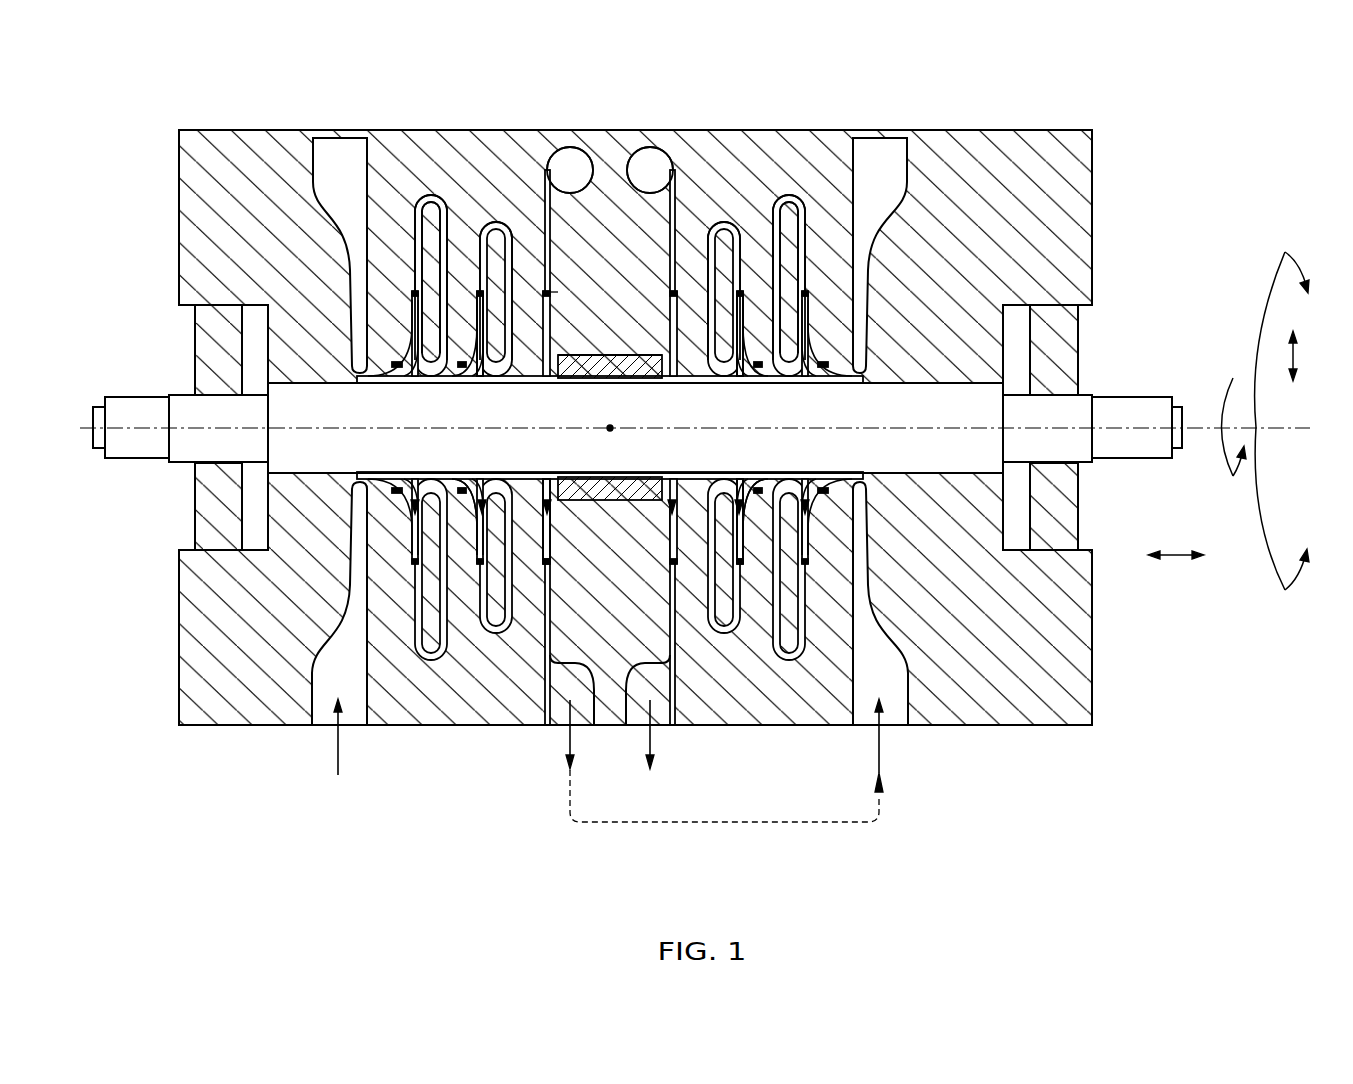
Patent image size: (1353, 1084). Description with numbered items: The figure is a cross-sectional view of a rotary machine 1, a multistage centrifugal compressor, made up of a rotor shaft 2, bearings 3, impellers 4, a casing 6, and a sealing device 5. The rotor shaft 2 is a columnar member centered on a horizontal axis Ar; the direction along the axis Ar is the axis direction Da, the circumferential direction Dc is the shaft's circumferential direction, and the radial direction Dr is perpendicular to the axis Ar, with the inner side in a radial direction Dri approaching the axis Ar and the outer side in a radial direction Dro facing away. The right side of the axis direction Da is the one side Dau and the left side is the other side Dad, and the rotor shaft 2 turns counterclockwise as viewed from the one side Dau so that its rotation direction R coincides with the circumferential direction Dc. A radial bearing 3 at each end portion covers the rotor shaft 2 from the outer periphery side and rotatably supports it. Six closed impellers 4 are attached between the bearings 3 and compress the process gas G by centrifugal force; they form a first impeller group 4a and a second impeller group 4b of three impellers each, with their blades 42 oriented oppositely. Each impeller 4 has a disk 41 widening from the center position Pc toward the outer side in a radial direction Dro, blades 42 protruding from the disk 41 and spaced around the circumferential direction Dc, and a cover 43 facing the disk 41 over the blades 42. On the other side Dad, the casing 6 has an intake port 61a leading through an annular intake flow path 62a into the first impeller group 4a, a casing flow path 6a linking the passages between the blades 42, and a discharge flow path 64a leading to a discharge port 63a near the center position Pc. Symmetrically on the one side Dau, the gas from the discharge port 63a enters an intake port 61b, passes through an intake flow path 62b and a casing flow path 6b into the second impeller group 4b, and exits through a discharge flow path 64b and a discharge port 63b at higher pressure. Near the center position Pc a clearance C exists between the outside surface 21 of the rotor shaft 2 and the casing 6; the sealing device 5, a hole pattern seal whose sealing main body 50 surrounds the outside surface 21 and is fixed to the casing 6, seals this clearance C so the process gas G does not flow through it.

The rotary machine 1 is at (1186, 260).
The rotor shaft 2 is at (1135, 388).
The outside surface 21 is at (582, 386).
The bearing 3 is at (212, 495).
The impeller 4 is at (414, 290).
The first impeller group 4a is at (373, 97).
The second impeller group 4b is at (850, 97).
The disk 41 is at (546, 545).
The blade 42 is at (545, 566).
The cover 43 is at (548, 520).
The sealing device 5 is at (631, 338).
The sealing main body 50 is at (608, 353).
The casing 6 is at (1080, 126).
The casing flow path 6a is at (442, 305).
The casing flow path 6b is at (725, 300).
The intake port 61a is at (323, 728).
The intake port 61b is at (893, 728).
The intake flow path 62a is at (353, 265).
The intake flow path 62b is at (862, 277).
The discharge port 63a is at (578, 700).
The discharge port 63b is at (636, 705).
The discharge flow path 64a is at (470, 300).
The discharge flow path 64b is at (700, 300).
The clearance C is at (565, 290).
The process gas G is at (505, 490).
The center position Pc is at (610, 428).
The circumferential direction Dc is at (1285, 252).
The radial direction Dr is at (1310, 356).
The outer side in a radial direction Dro is at (1293, 324).
The inner side in a radial direction Dri is at (1293, 390).
The axis direction Da is at (1172, 557).
The other side Dad is at (1130, 555).
The one side Dau is at (1222, 555).
The rotation direction R is at (1233, 378).
The axis Ar is at (1288, 438).